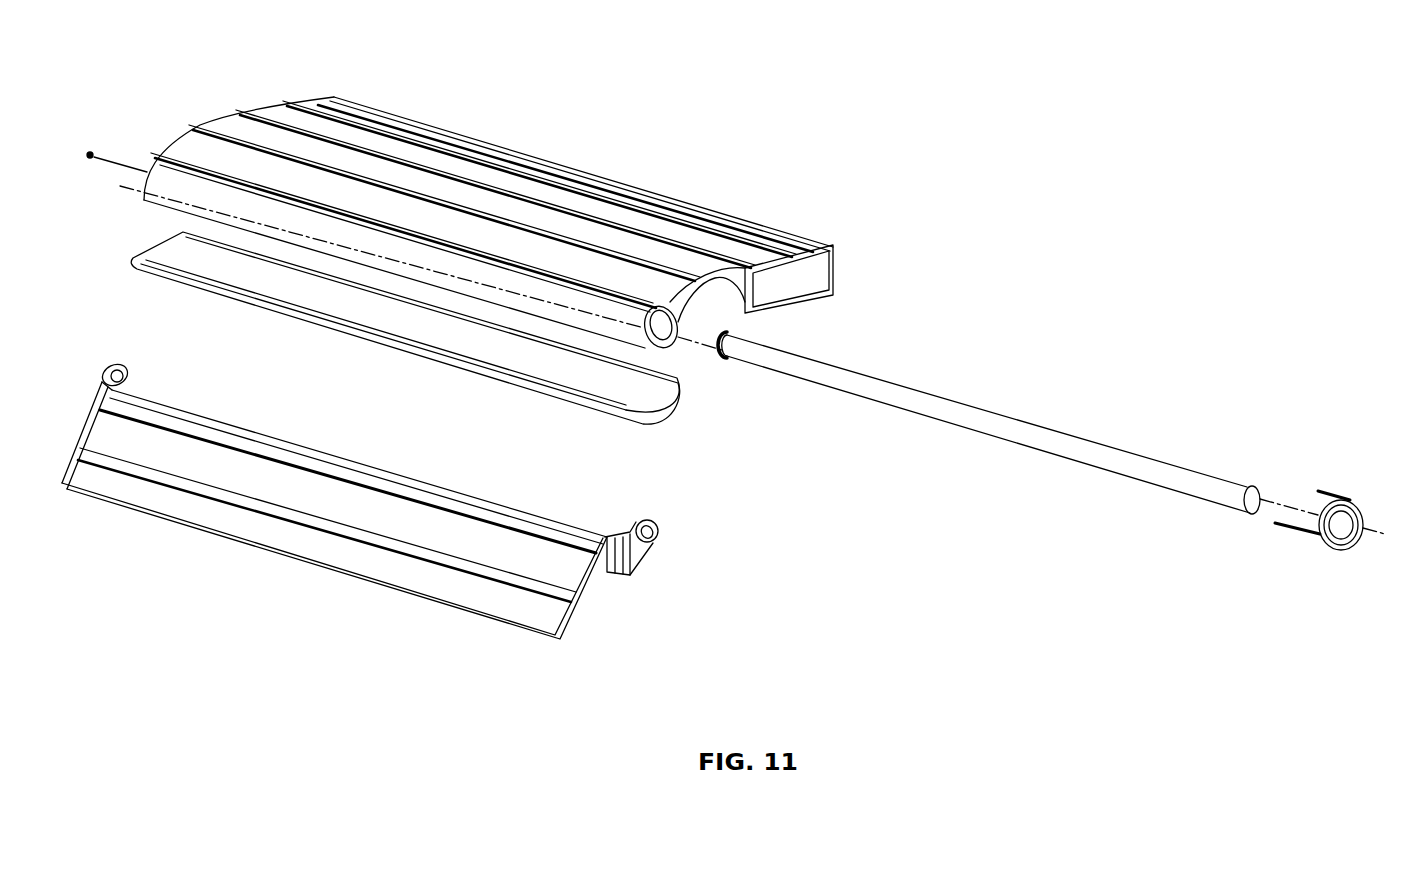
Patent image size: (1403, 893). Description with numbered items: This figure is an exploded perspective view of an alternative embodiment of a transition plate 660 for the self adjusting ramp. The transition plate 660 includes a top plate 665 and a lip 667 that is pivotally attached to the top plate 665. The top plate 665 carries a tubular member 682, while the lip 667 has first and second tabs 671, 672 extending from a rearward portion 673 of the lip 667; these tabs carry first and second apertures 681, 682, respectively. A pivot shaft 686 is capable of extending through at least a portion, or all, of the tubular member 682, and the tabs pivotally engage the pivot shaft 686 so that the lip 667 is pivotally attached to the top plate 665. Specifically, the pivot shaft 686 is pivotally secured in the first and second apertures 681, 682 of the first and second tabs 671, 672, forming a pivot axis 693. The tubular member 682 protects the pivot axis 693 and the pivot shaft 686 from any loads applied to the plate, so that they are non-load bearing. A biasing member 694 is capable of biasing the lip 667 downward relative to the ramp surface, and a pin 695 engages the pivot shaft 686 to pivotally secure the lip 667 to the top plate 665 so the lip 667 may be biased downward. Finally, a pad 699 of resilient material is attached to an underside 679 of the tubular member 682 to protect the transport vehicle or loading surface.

The transition plate 660 is at (689, 116).
The top plate 665 is at (458, 146).
The lip 667 is at (483, 598).
The first tab 671 is at (104, 371).
The second tab 672 is at (643, 550).
The rearward portion 673 is at (532, 517).
The underside 679 is at (667, 349).
The first aperture 681 is at (130, 372).
The tubular member 682 is at (167, 180).
The pivot shaft 686 is at (985, 425).
The pivot axis 693 is at (795, 388).
The biasing member 694 is at (1350, 497).
The pin 695 is at (91, 149).
The pad 699 is at (300, 322).